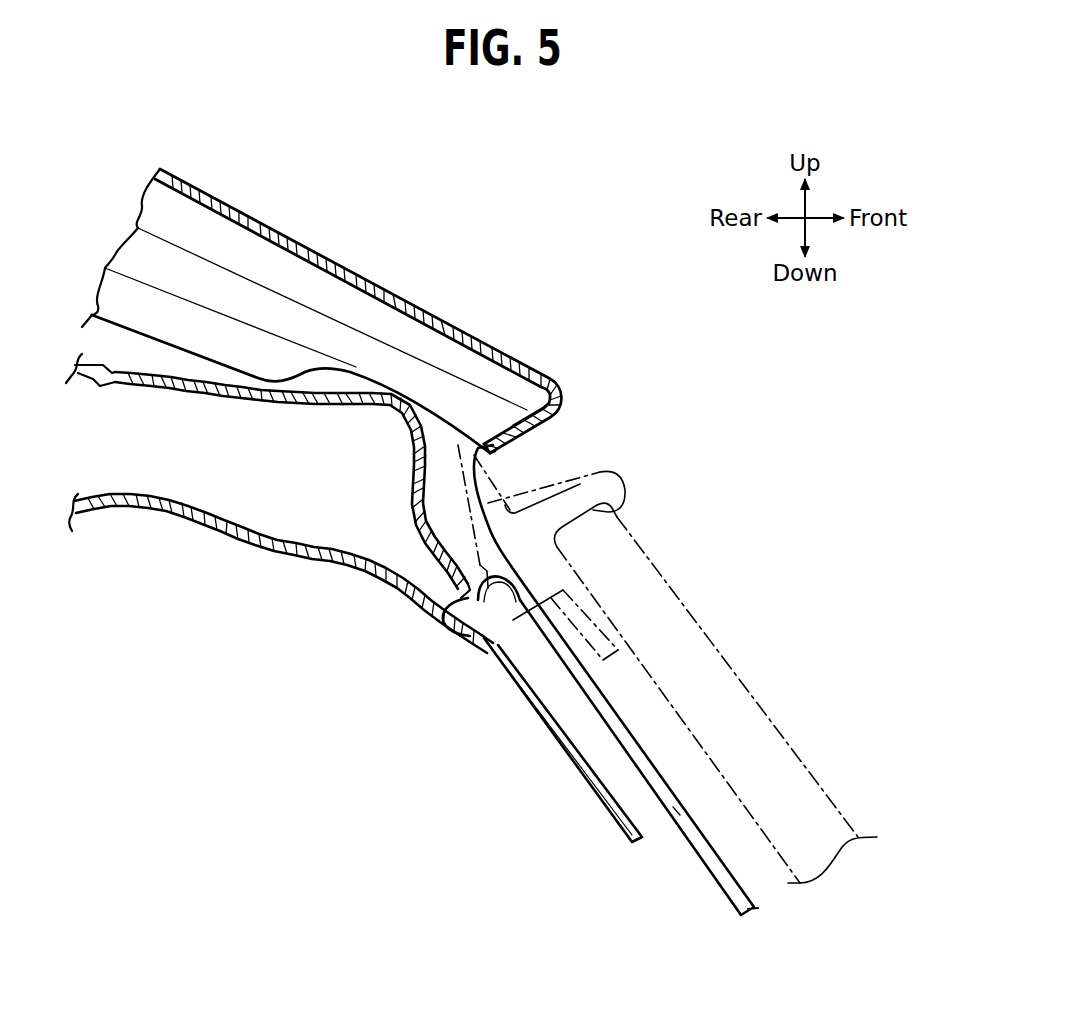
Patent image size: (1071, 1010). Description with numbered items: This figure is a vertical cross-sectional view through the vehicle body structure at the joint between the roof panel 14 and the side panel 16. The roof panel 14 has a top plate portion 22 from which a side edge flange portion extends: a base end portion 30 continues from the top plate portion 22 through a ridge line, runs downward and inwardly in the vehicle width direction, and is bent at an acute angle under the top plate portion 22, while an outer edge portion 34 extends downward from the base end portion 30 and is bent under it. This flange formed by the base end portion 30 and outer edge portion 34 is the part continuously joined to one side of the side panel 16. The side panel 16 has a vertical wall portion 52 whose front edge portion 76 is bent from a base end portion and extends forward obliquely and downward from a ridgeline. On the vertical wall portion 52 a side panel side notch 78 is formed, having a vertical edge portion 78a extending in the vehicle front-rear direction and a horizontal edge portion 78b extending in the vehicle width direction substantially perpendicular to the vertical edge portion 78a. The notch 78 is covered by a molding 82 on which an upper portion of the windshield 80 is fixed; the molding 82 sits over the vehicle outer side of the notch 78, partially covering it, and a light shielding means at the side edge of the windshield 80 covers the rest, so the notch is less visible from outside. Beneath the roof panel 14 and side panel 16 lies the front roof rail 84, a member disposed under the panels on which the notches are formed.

The roof panel 14 is at (407, 279).
The top plate portion 22 is at (290, 228).
The outer edge portion 34 is at (506, 425).
The base end portion 30 is at (536, 428).
The side panel 16 is at (386, 433).
The side panel side notch 78 is at (507, 594).
The vertical edge portion 78a is at (641, 770).
The horizontal edge portion 78b is at (445, 617).
The front roof rail 84 is at (554, 749).
The windshield 80 is at (752, 690).
The molding 82 is at (625, 482).
The front edge portion 76 is at (744, 893).
The vertical wall portion 52 is at (749, 911).